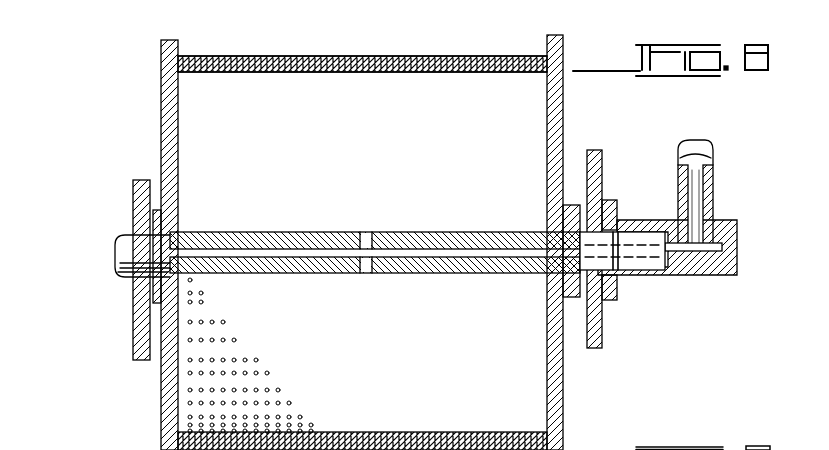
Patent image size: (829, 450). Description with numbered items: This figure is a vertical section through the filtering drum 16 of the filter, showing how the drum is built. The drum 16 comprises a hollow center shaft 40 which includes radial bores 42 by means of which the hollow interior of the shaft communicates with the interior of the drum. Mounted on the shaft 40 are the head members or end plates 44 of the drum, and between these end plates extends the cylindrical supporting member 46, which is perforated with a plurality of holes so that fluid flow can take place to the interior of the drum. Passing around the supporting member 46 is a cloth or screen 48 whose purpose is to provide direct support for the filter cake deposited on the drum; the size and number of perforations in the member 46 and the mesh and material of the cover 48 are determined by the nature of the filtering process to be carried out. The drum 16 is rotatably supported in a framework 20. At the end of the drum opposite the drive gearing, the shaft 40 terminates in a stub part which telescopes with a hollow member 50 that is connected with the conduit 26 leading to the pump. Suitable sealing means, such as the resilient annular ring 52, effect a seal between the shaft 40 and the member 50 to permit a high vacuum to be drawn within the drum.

The drum 16 is at (340, 245).
The framework 20 is at (600, 156).
The conduit 26 is at (713, 190).
The hollow center shaft 40 is at (470, 232).
The radial bores 42 is at (368, 275).
The end plates 44 is at (563, 410).
The cylindrical supporting member 46 is at (438, 72).
The cloth or screen 48 is at (486, 72).
The hollow member 50 is at (683, 275).
The resilient annular ring 52 is at (618, 232).